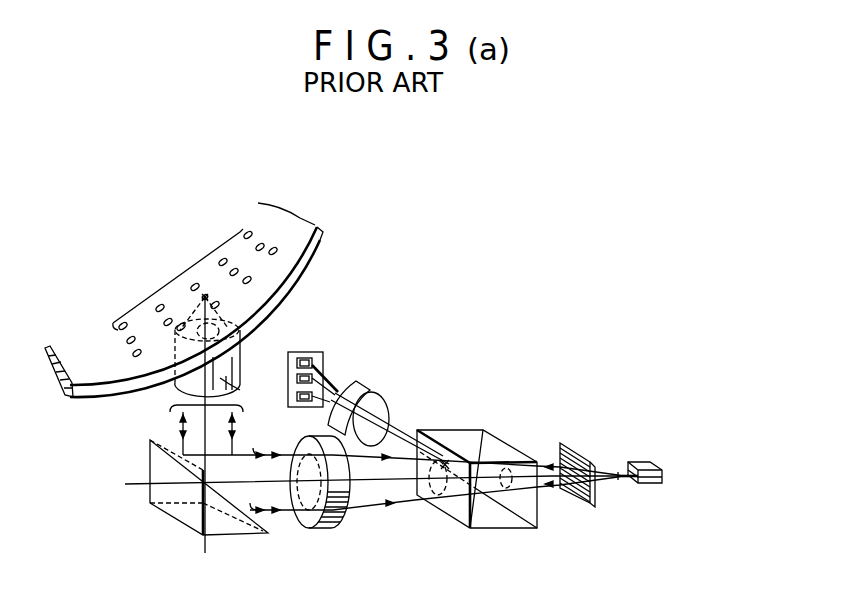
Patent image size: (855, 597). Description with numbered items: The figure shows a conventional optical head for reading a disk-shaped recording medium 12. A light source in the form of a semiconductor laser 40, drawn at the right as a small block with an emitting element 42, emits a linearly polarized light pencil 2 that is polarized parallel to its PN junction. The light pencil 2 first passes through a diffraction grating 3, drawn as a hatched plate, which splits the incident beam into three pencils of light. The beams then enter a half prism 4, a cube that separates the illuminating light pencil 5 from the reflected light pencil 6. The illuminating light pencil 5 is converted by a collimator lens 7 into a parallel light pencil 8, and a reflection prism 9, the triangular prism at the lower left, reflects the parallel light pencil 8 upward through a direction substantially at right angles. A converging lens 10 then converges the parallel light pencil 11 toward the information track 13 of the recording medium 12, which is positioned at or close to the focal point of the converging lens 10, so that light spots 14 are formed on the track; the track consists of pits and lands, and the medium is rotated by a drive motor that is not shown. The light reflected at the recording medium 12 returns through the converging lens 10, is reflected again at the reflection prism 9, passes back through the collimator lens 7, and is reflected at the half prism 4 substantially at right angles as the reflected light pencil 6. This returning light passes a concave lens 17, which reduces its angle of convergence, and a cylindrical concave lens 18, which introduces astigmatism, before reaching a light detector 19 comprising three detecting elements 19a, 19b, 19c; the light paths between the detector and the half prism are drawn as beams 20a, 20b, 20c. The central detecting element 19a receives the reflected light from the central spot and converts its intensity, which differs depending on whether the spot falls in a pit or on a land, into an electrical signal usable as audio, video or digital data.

The light pencil 2 is at (620, 482).
The diffraction grating 3 is at (578, 450).
The half prism 4 is at (510, 438).
The illuminating light pencil 5 is at (350, 497).
The reflected light pencil 6 is at (300, 397).
The collimator lens 7 is at (315, 530).
The parallel light pencil 8 is at (183, 448).
The reflection prism 9 is at (222, 538).
The converging lens 10 is at (242, 339).
The parallel light pencil 11 is at (226, 370).
The disk-shaped recording medium 12 is at (322, 242).
The information track 13 is at (196, 284).
The light spots 14 is at (205, 296).
The concave lens 17 is at (388, 408).
The cylindrical concave lens 18 is at (366, 389).
The light detector 19 is at (323, 346).
The detecting element 19a is at (313, 376).
The detecting element 19b is at (302, 358).
The detecting element 19c is at (300, 400).
The light beam 20a is at (300, 368).
The light beam 20b is at (347, 356).
The light beam 20c is at (390, 417).
The semiconductor laser 40 is at (650, 463).
The laser chip 42 is at (630, 481).